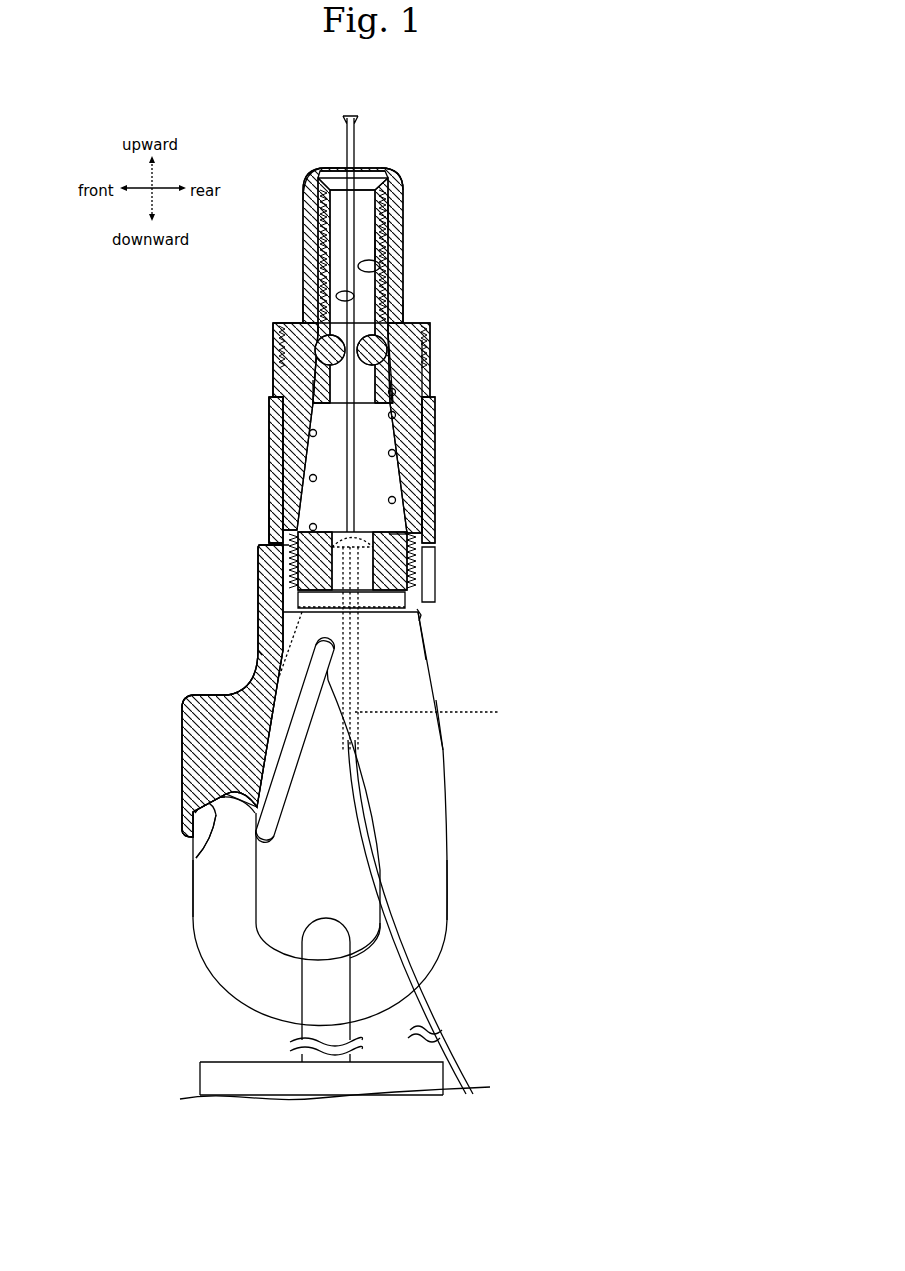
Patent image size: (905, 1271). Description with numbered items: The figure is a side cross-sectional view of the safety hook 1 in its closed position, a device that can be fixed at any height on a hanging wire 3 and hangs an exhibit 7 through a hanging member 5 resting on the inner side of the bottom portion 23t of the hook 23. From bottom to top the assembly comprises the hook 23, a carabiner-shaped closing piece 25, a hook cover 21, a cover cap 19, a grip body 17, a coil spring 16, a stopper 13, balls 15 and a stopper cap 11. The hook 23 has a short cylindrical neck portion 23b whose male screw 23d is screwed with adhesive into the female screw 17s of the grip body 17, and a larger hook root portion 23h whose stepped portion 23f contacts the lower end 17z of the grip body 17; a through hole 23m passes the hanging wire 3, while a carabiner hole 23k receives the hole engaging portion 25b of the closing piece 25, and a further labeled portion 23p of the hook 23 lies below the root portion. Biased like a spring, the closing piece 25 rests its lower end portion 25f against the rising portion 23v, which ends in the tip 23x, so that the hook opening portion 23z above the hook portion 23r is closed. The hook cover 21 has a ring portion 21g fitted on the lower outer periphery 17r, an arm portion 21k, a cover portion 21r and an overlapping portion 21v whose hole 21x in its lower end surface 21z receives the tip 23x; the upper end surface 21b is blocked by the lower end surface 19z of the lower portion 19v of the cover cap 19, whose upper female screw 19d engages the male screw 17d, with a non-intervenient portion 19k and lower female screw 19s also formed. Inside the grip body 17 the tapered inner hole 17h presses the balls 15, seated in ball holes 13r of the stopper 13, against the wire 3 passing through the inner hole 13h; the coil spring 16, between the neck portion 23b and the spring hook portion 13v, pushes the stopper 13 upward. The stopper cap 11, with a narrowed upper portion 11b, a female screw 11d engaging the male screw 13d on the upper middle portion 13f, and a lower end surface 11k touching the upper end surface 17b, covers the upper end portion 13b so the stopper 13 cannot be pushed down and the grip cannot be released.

The safety hook 1 is at (183, 452).
The hanging wire 3 is at (357, 137).
The hanging member 5 is at (318, 1000).
The exhibit 7 is at (240, 1083).
The stopper cap 11 is at (405, 205).
The upper portion 11b is at (313, 173).
The female screw 11d is at (403, 196).
The lower end surface 11k is at (395, 322).
The stopper (middle pin) 13 is at (392, 268).
The upper end portion 13b is at (370, 190).
The male screw 13d is at (390, 215).
The upper middle portion 13f is at (378, 247).
The inner hole 13h is at (380, 265).
The ball hole 13r is at (353, 296).
The spring hook portion 13v is at (305, 402).
The ball 15 is at (397, 335).
The coil spring 16 is at (425, 372).
The grip body 17 is at (402, 392).
The upper end surface 17b is at (303, 322).
The male screw 17d is at (398, 388).
The tapered inner hole 17h is at (398, 420).
The lower outer periphery 17r is at (402, 550).
The female screw 17s is at (400, 572).
The lower end 17z is at (421, 617).
The cover cap 19 is at (436, 451).
The upper female screw (first female screw) 19d is at (382, 346).
The non-intervenient portion 19k is at (423, 483).
The lower female screw (second female screw) 19s is at (397, 500).
The lower portion 19v is at (270, 508).
The lower end surface 19z is at (272, 545).
The hook cover 21 is at (258, 628).
The upper end surface 21b is at (268, 544).
The ring portion 21g is at (272, 577).
The arm portion 21k is at (268, 655).
The cover portion 21r is at (206, 718).
The overlapping portion 21v is at (205, 800).
The hole 21x is at (212, 826).
The lower end surface 21z is at (186, 836).
The hook 23 is at (450, 821).
The neck portion (connecting portion) 23b is at (417, 545).
The male screw 23d is at (424, 580).
The stepped portion 23f is at (417, 600).
The hook root portion 23h is at (402, 648).
The carabiner hole 23k is at (332, 660).
The through hole 23m is at (449, 711).
The body side wall 23p is at (441, 740).
The hook portion 23r is at (441, 880).
The bottom portion 23t is at (356, 983).
The rising portion 23v is at (226, 882).
The tip 23x is at (200, 815).
The hook opening portion 23z is at (261, 729).
The carabiner-shaped closing piece 25 is at (288, 763).
The hole engaging portion 25b is at (318, 651).
The lower end portion 25f is at (263, 844).